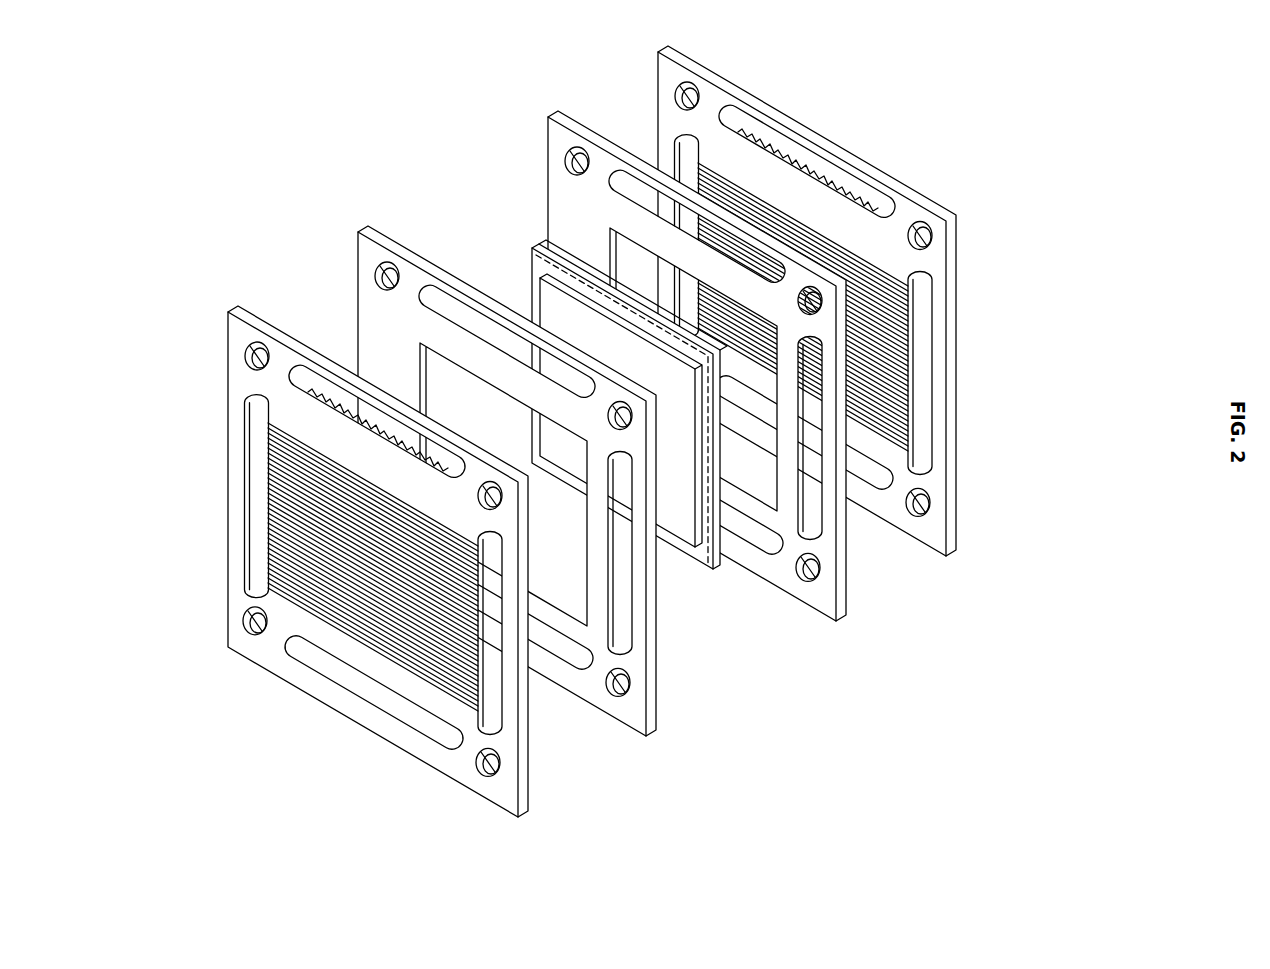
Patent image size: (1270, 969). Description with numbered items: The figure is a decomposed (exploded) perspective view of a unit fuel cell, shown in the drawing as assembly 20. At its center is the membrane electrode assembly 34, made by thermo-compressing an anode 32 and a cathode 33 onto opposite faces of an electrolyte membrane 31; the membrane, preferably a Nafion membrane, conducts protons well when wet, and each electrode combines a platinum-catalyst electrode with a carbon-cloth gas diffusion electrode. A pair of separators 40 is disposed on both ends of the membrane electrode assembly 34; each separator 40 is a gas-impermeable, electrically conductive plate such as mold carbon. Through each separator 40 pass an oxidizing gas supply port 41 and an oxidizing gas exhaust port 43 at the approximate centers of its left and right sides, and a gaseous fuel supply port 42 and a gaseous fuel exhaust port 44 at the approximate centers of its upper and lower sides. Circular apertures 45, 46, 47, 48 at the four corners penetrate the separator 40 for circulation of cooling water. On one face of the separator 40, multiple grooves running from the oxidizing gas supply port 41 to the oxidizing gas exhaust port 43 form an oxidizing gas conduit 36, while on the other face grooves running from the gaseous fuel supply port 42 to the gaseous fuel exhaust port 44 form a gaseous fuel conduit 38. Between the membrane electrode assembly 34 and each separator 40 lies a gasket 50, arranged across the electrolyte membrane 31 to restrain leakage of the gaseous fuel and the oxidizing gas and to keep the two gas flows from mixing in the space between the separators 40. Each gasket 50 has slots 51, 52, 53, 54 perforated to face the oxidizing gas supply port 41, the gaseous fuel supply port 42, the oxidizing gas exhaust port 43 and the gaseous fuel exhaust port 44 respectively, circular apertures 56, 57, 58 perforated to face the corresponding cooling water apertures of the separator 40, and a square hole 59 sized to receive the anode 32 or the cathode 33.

The fuel cell stack 20 is at (903, 106).
The electrolyte membrane 31 is at (626, 406).
The anode 32 is at (548, 300).
The cathode 33 is at (633, 295).
The membrane electrode assembly 34 is at (515, 320).
The oxidizing gas conduit 36 is at (268, 522).
The gaseous fuel conduit 38 is at (398, 444).
The separator 40 is at (465, 787).
The oxidizing gas supply port 41 is at (250, 555).
The gaseous fuel supply port 42 is at (290, 376).
The oxidizing gas exhaust port 43 is at (492, 722).
The gaseous fuel exhaust port 44 is at (345, 672).
The circular aperture 45 is at (246, 622).
The circular aperture 46 is at (500, 768).
The circular aperture 47 is at (245, 352).
The circular aperture 48 is at (495, 508).
The gasket 50 is at (635, 727).
The slot 51 is at (548, 352).
The slot 52 is at (432, 286).
The slot 53 is at (633, 620).
The slot 54 is at (630, 675).
The circular aperture 56 is at (628, 694).
The circular aperture 57 is at (375, 276).
The circular aperture 58 is at (626, 427).
The window opening 59 is at (452, 365).